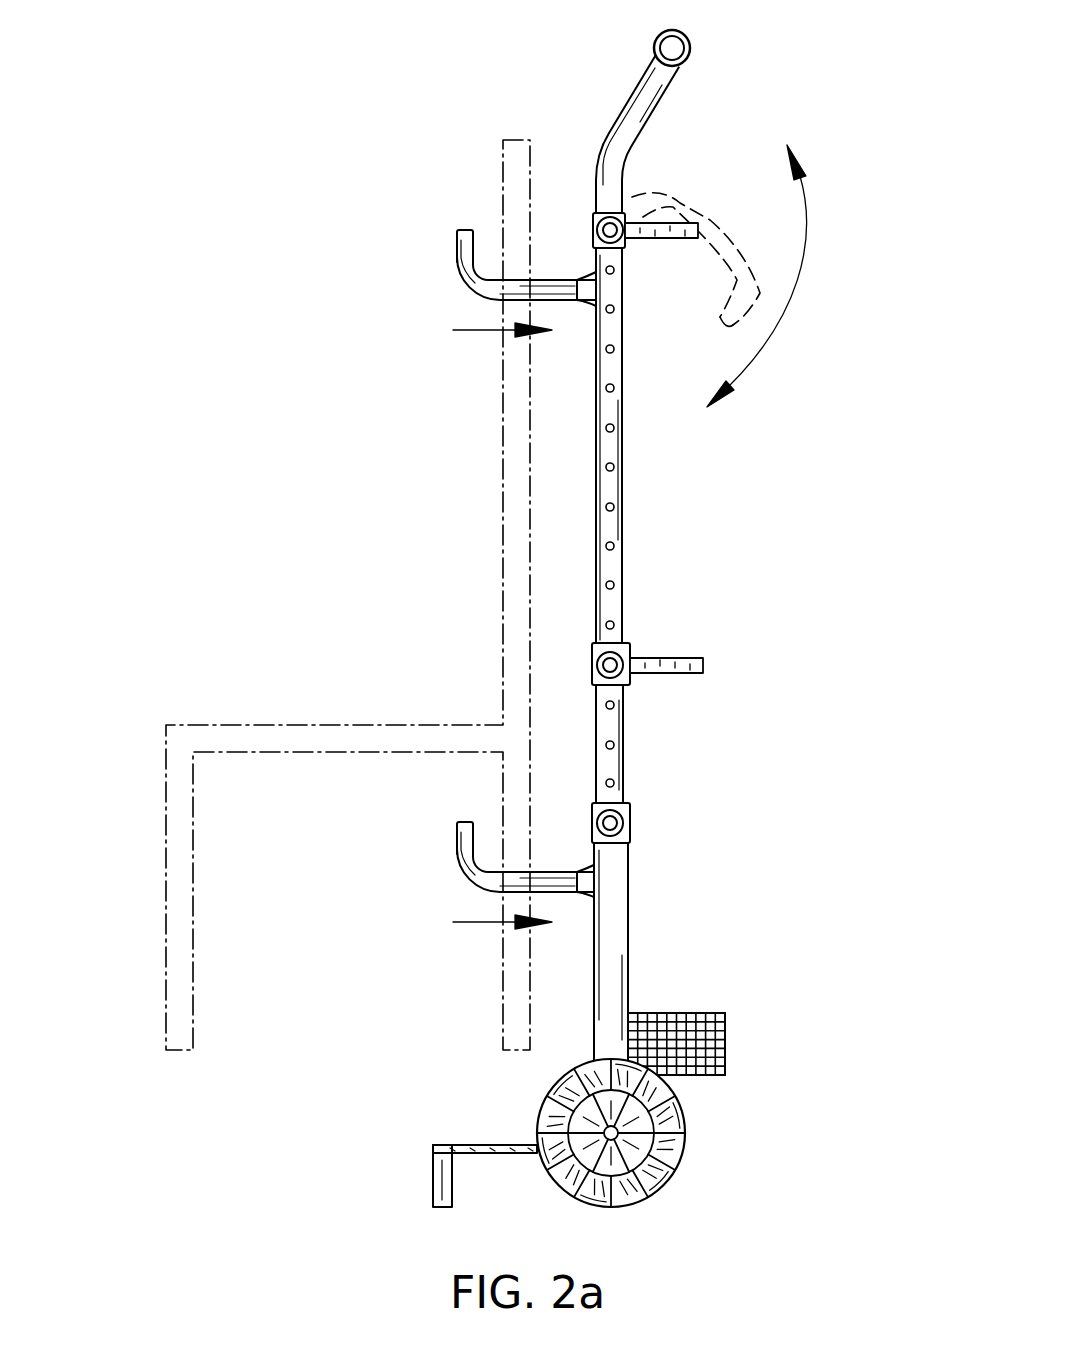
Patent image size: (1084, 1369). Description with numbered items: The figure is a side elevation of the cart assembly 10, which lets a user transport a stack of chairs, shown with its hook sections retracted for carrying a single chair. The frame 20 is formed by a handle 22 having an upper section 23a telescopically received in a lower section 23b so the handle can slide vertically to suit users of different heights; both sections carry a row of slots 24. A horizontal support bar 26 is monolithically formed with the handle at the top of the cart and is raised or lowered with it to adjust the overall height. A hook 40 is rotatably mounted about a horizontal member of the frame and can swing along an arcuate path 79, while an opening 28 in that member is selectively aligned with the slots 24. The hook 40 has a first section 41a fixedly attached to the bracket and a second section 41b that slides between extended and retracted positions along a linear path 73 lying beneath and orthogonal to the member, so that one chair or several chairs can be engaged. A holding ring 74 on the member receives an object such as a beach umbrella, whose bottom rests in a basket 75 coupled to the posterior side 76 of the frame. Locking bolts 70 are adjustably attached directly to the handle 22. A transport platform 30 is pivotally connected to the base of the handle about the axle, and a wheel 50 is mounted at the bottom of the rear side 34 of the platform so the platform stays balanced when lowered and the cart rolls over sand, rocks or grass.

The cart assembly 10 is at (138, 118).
The frame 20 is at (642, 508).
The handle 22 is at (622, 578).
The upper section 23a is at (612, 455).
The lower section 23b is at (625, 970).
The slot 24 is at (617, 942).
The horizontal support bar 26 is at (690, 53).
The opening 28 is at (617, 660).
The transport platform 30 is at (435, 1143).
The rear side 34 is at (490, 1147).
The hook 40 is at (466, 274).
The first section 41a is at (585, 283).
The second section 41b is at (458, 245).
The wheel 50 is at (685, 1137).
The locking bolt 70 is at (615, 245).
The linear path 73 is at (483, 330).
The holding ring 74 is at (665, 240).
The basket 75 is at (725, 1040).
The posterior side 76 is at (630, 1012).
The arcuate path 79 is at (802, 293).